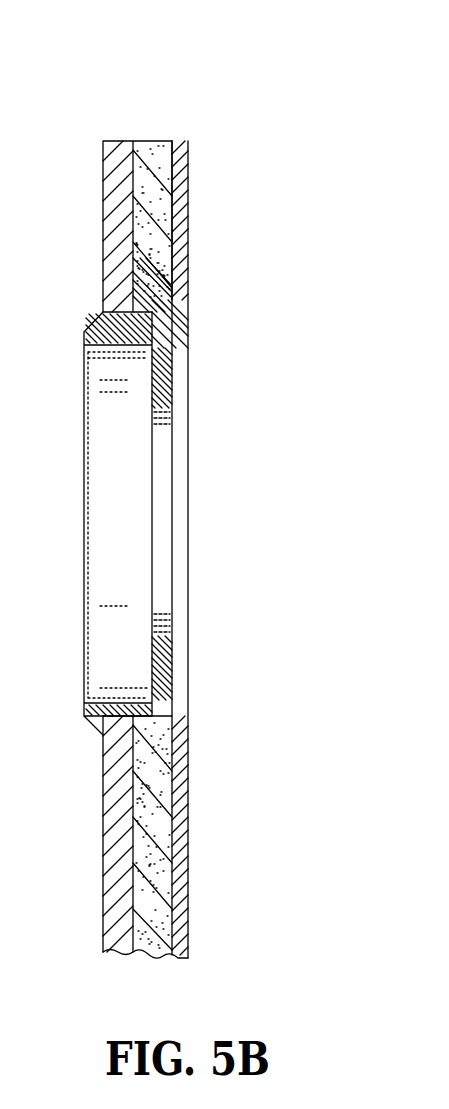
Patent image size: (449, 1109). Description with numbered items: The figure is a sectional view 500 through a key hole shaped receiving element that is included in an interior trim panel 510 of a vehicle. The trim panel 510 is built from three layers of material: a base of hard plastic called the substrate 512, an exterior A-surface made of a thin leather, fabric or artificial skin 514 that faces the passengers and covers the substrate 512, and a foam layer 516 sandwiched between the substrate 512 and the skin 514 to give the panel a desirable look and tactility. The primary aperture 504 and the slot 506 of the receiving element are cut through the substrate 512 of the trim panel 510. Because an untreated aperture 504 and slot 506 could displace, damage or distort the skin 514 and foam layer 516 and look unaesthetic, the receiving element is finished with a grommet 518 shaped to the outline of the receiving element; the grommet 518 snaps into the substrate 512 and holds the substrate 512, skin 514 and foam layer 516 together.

The sectional view 500 is at (233, 493).
The primary aperture 504 is at (148, 538).
The slot 506 is at (195, 664).
The trim panel 510 is at (193, 955).
The substrate 512 is at (110, 140).
The skin 514 is at (190, 150).
The foam layer 516 is at (154, 140).
The grommet 518 is at (190, 303).